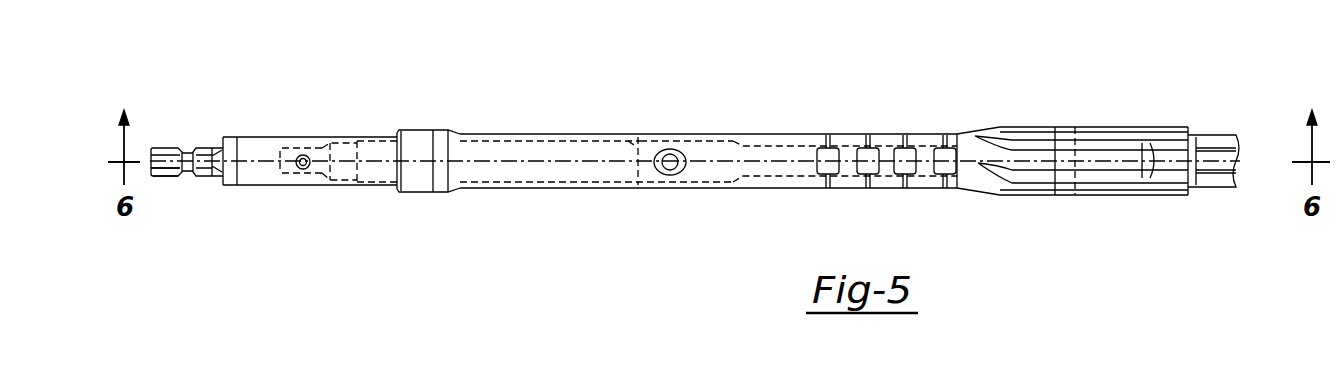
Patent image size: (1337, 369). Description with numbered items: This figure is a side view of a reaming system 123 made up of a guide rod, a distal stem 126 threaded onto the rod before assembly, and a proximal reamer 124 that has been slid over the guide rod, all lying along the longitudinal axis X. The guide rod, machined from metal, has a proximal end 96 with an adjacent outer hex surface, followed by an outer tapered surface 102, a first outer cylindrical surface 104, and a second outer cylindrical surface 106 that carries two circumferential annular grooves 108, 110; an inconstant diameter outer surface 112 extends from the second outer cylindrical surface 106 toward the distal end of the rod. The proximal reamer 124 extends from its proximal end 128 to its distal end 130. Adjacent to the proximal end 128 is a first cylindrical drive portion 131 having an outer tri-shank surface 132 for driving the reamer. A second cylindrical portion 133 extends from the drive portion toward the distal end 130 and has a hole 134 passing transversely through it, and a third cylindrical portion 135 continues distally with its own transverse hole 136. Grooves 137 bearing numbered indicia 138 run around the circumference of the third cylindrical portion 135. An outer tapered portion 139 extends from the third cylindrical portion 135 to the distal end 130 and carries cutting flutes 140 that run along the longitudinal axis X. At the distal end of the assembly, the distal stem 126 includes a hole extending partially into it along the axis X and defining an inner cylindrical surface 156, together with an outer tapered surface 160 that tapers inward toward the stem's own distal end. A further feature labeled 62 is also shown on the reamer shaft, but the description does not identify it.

The longitudinal axis X is at (508, 165).
The shaft 62 is at (777, 134).
The proximal end 96 is at (272, 158).
The outer tapered surface 102 is at (318, 187).
The first outer cylindrical surface 104 is at (343, 143).
The second outer cylindrical surface 106 is at (568, 188).
The annular groove 108 is at (633, 137).
The annular groove 110 is at (670, 140).
The inconstant diameter outer surface 112 is at (960, 190).
The reaming system 123 is at (494, 98).
The proximal reamer 124 is at (802, 125).
The distal stem 126 is at (1194, 123).
The proximal end 128 is at (151, 157).
The distal end 130 is at (1190, 195).
The first cylindrical drive portion 131 is at (168, 148).
The outer tri-shank surface 132 is at (168, 177).
The second cylindrical portion 133 is at (298, 137).
The hole 134 is at (305, 170).
The third cylindrical portion 135 is at (580, 134).
The hole 136 is at (668, 175).
The grooves 137 is at (945, 190).
The numbered indicia 138 is at (945, 136).
The outer tapered portion 139 is at (1000, 127).
The cutting flutes 140 is at (1047, 127).
The inner cylindrical surface 156 is at (1147, 140).
The outer tapered surface 160 is at (1230, 135).